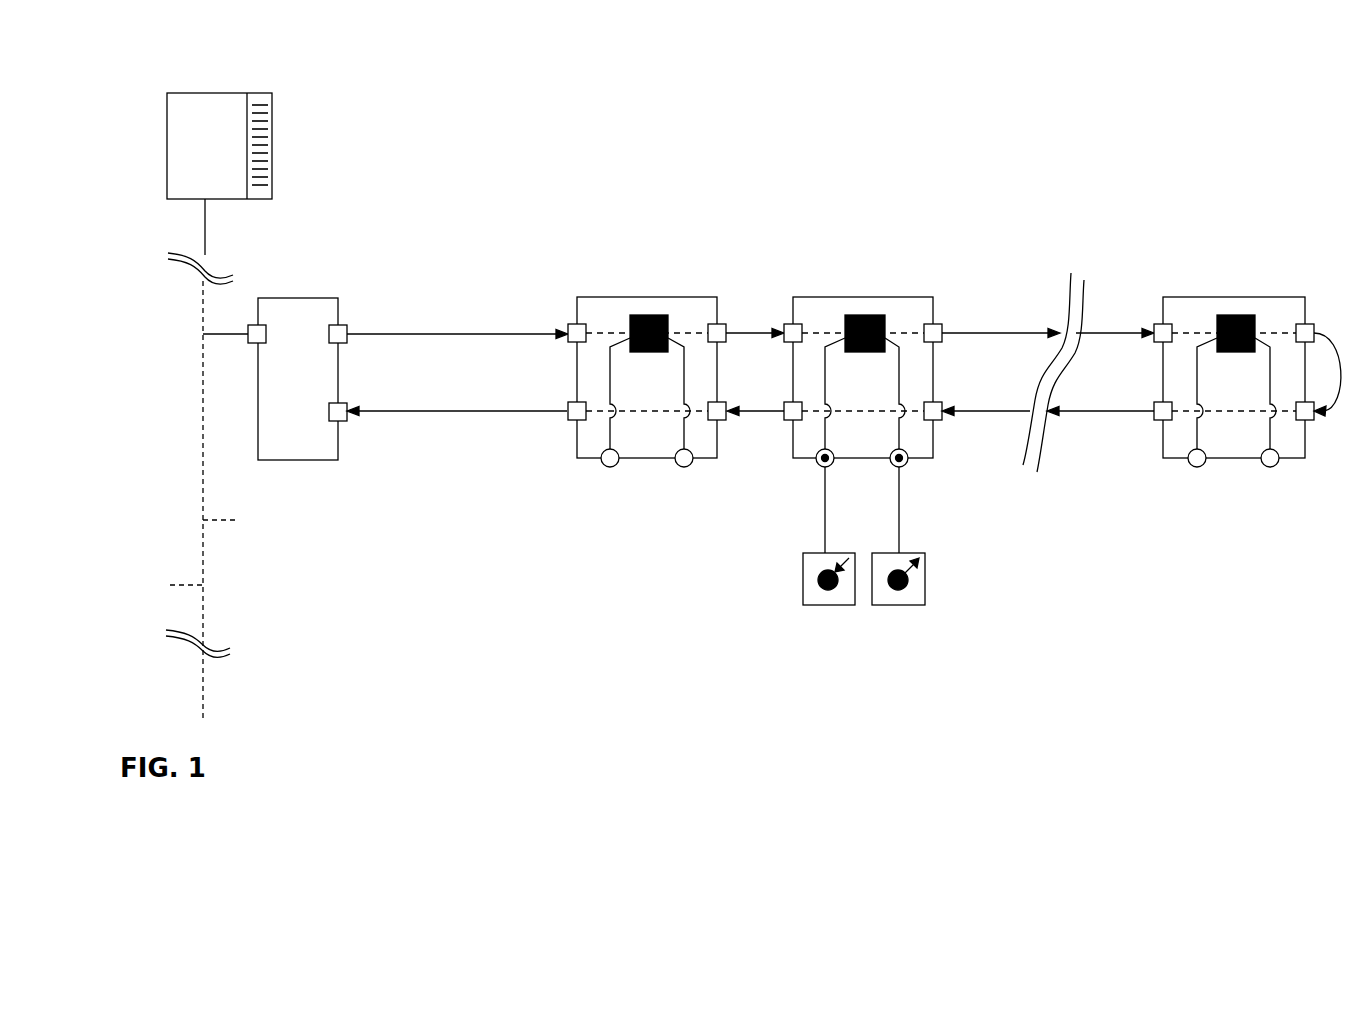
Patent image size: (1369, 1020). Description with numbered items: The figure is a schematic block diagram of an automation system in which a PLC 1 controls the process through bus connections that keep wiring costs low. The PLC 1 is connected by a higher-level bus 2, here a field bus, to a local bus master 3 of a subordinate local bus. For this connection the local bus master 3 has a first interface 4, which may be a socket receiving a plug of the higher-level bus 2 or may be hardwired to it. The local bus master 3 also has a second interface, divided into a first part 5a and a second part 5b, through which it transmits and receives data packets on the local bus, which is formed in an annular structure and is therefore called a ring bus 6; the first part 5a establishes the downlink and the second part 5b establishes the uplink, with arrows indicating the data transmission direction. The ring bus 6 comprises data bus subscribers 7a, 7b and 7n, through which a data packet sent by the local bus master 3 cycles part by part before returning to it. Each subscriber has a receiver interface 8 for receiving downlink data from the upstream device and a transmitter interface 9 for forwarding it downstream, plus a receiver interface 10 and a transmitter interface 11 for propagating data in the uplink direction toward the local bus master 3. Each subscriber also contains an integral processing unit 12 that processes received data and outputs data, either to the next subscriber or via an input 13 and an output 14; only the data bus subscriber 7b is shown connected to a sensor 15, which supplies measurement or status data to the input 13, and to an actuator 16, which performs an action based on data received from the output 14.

The programmable logic controller 1 is at (219, 174).
The higher-level bus 2 is at (200, 300).
The local bus master 3 is at (298, 379).
The first interface 4 is at (256, 344).
The first part of the second interface 5a is at (340, 324).
The second part of the second interface 5b is at (339, 422).
The ring bus 6 is at (445, 333).
The data bus subscriber 7a is at (648, 348).
The data bus subscriber 7b is at (863, 382).
The data bus subscriber 7n is at (1247, 382).
The interface 8 is at (577, 324).
The interface 9 is at (717, 324).
The interface 10 is at (718, 420).
The interface 11 is at (577, 420).
The processing unit 12 is at (652, 313).
The input 13 is at (610, 467).
The output 14 is at (686, 467).
The sensor 15 is at (833, 607).
The actuator 16 is at (905, 607).